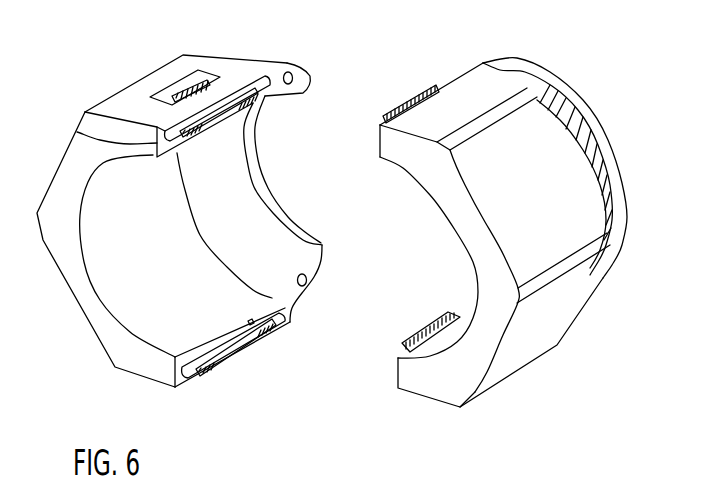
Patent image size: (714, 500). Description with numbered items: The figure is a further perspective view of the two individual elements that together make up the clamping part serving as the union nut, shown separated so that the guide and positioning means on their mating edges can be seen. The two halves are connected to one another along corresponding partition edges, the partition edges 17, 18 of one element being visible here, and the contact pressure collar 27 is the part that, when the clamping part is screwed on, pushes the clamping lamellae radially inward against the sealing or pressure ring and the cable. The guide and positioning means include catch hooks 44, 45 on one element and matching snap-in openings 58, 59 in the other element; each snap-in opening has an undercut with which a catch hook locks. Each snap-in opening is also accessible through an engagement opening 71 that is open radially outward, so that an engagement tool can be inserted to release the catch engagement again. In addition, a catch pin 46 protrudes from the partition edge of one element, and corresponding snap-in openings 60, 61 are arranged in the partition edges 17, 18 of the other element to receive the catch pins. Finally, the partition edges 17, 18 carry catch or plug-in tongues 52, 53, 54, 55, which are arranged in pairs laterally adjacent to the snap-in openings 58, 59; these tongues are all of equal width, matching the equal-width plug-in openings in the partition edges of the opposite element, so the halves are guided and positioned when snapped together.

The partition edge 17 is at (160, 114).
The partition edge 18 is at (217, 353).
The contact pressure collar 27 is at (249, 162).
The catch hook 44 is at (392, 118).
The catch hook 45 is at (415, 334).
The catch pin 46 is at (488, 63).
The plug-in tongue 52 is at (263, 63).
The plug-in tongue 53 is at (77, 132).
The plug-in tongue 54 is at (193, 377).
The plug-in tongue 55 is at (282, 323).
The snap-in opening 58 is at (222, 114).
The snap-in opening 59 is at (233, 340).
The snap-in opening 60 is at (293, 66).
The snap-in opening 61 is at (313, 281).
The engagement opening 71 is at (180, 98).